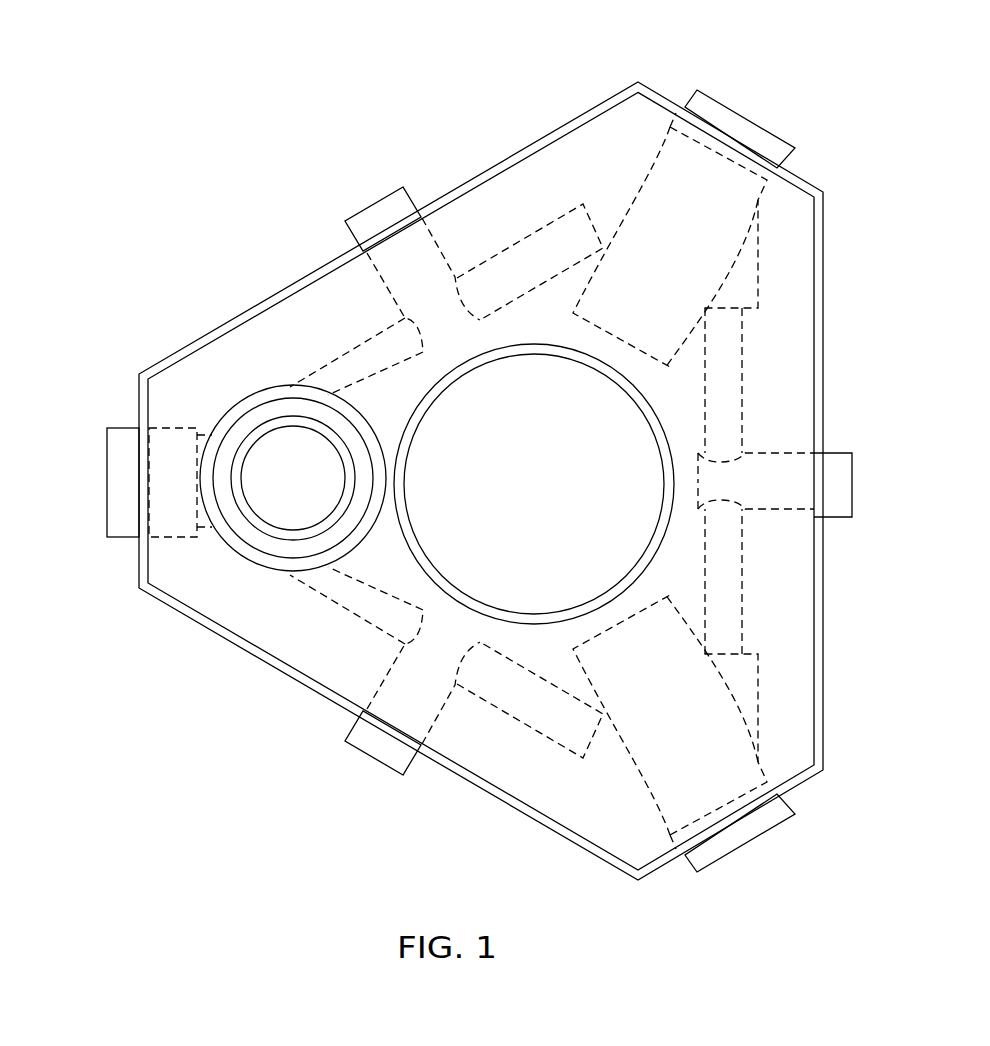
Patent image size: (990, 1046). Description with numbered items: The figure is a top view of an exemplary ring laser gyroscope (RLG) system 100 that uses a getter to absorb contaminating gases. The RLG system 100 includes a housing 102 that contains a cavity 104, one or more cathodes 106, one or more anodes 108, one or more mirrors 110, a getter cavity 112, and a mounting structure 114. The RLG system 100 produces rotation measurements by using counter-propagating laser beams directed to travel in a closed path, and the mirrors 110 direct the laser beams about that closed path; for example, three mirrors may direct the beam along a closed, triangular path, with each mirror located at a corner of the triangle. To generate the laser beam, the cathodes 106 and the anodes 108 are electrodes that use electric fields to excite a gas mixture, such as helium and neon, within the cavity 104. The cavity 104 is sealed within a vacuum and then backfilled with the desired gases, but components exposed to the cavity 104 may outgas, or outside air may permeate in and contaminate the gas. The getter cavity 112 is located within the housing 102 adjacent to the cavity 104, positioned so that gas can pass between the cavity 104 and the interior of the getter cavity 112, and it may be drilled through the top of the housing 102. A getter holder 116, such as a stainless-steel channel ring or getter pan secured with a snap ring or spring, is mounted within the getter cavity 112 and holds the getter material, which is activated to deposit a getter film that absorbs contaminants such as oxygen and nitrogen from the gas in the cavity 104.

The ring laser gyroscope system 100 is at (893, 77).
The housing 102 is at (823, 277).
The cavity 104 is at (742, 590).
The cathode 106 is at (852, 484).
The anode 108 is at (372, 207).
The mirror 110 is at (750, 121).
The getter cavity 112 is at (262, 460).
The mounting structure 114 is at (443, 540).
The getter holder 116 is at (265, 400).